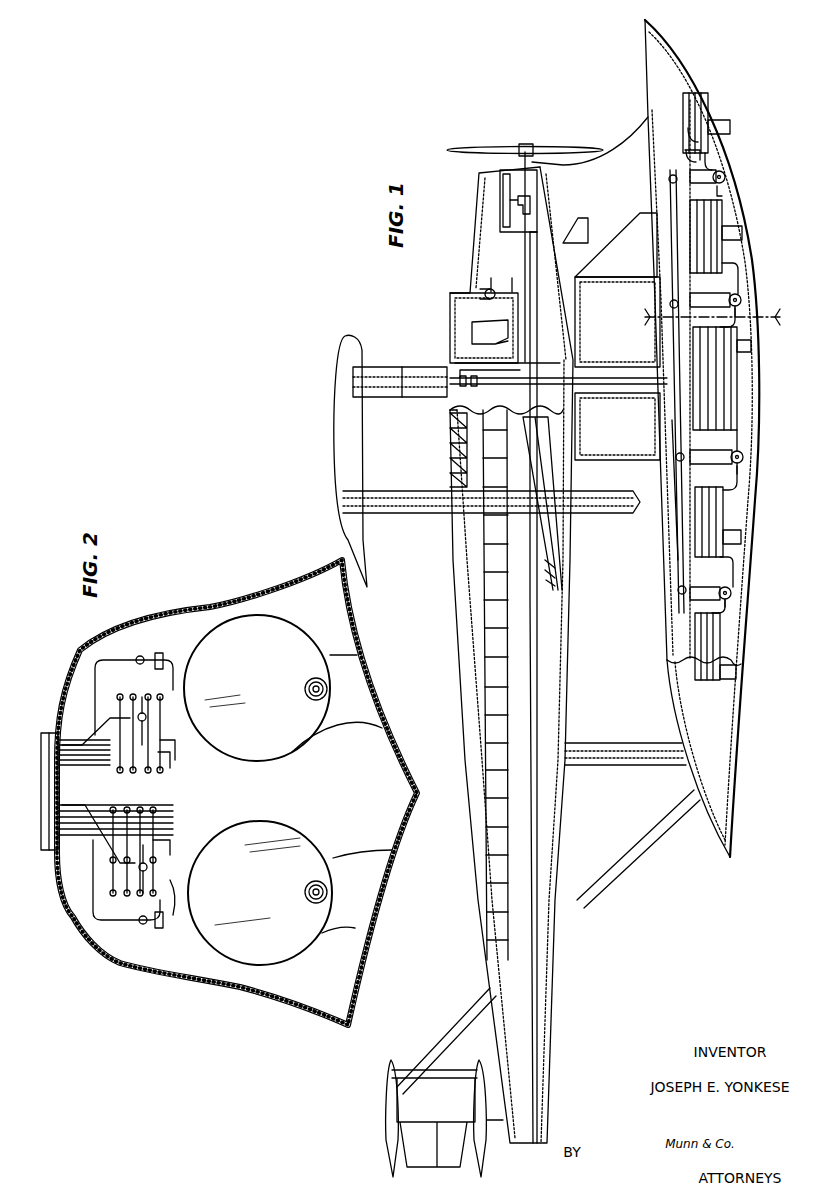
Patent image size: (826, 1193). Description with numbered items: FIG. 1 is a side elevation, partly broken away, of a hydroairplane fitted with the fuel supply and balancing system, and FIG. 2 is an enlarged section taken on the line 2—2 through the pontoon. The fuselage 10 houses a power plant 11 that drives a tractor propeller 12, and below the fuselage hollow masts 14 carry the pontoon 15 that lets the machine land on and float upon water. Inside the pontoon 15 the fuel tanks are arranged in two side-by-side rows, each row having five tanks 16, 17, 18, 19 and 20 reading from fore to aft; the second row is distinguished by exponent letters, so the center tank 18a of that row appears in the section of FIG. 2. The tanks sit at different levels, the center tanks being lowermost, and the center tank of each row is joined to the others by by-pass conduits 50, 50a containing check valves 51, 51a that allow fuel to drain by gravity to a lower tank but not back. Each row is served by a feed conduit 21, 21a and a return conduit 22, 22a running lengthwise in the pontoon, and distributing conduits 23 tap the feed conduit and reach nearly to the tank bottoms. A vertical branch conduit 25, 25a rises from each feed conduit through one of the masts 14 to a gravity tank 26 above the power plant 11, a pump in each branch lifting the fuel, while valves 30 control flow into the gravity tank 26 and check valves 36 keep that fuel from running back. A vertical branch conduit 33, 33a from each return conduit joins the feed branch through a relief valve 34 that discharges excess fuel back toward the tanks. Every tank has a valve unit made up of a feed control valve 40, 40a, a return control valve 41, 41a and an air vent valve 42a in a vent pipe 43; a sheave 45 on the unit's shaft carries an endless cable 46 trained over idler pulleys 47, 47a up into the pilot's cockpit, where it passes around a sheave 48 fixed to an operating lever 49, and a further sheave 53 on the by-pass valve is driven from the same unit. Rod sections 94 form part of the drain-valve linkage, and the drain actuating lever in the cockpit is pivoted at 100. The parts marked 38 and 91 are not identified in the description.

In FIG. 1, the section line 2 is at (709, 315).
In FIG. 1, the fuselage 10 is at (476, 243).
In FIG. 1, the power plant 11 is at (503, 200).
In FIG. 1, the tractor propeller 12 is at (525, 147).
In FIG. 1, the hollow masts 14 is at (603, 362).
In FIG. 1, the pontoon 15 is at (447, 330).
In FIG. 2, the pontoon 15 is at (340, 562).
In FIG. 1, the fuel tank 16 is at (694, 123).
In FIG. 1, the fuel tank 17 is at (705, 236).
In FIG. 1, the fuel tank 18 is at (714, 378).
In FIG. 2, the fuel tank 18 is at (260, 893).
In FIG. 2, the fuel tank 18a is at (257, 688).
In FIG. 1, the fuel tank 19 is at (708, 522).
In FIG. 1, the fuel tank 20 is at (705, 646).
In FIG. 1, the feed conduit 21 is at (676, 575).
In FIG. 2, the feed conduit 21 is at (143, 924).
In FIG. 2, the feed conduit 21a is at (140, 656).
In FIG. 1, the return conduit 22 is at (688, 132).
In FIG. 2, the return conduit 22 is at (143, 890).
In FIG. 2, the return conduit 22a is at (141, 697).
In FIG. 1, the distributing conduits 23 is at (686, 155).
In FIG. 2, the distributing conduits 23 is at (174, 916).
In FIG. 2, the vertical branch conduit 25 is at (128, 921).
In FIG. 2, the vertical branch conduit 25a is at (128, 660).
In FIG. 1, the gravity tank 26 is at (409, 366).
In FIG. 2, the gravity tank 26 is at (48, 732).
In FIG. 1, the valve 30 is at (722, 152).
In FIG. 1, the vertical branch conduit 33 is at (531, 205).
In FIG. 2, the vertical branch conduit 33 is at (90, 838).
In FIG. 2, the vertical branch conduit 33a is at (90, 740).
In FIG. 1, the relief valve 34 is at (476, 387).
In FIG. 1, the check valve 36 is at (464, 387).
In FIG. 1, the control box 38 is at (484, 328).
In FIG. 2, the feed control valve 40 is at (159, 928).
In FIG. 2, the feed control valve 40a is at (159, 653).
In FIG. 1, the return control valve 41 is at (720, 190).
In FIG. 2, the return control valve 41 is at (171, 842).
In FIG. 2, the return control valve 41a is at (176, 742).
In FIG. 2, the air vent valve 42a is at (171, 754).
In FIG. 1, the vent pipe 43 is at (688, 150).
In FIG. 1, the sheave 45 is at (650, 110).
In FIG. 1, the endless flexible cable 46 is at (533, 377).
In FIG. 1, the idler pulleys 47 is at (512, 278).
In FIG. 2, the idler pulleys 47 is at (158, 810).
In FIG. 2, the idler pulleys 47a is at (114, 716).
In FIG. 1, the sheave 48 is at (491, 278).
In FIG. 1, the operating lever 49 is at (485, 291).
In FIG. 2, the by-pass conduits 50 is at (311, 902).
In FIG. 2, the by-pass conduits 50a is at (311, 700).
In FIG. 2, the check valves 51 is at (312, 887).
In FIG. 2, the check valves 51a is at (312, 683).
In FIG. 1, the sheave 53 is at (726, 178).
In FIG. 1, the partition 91 is at (540, 380).
In FIG. 1, the rod sections 94 is at (690, 100).
In FIG. 1, the pivot 100 is at (486, 320).